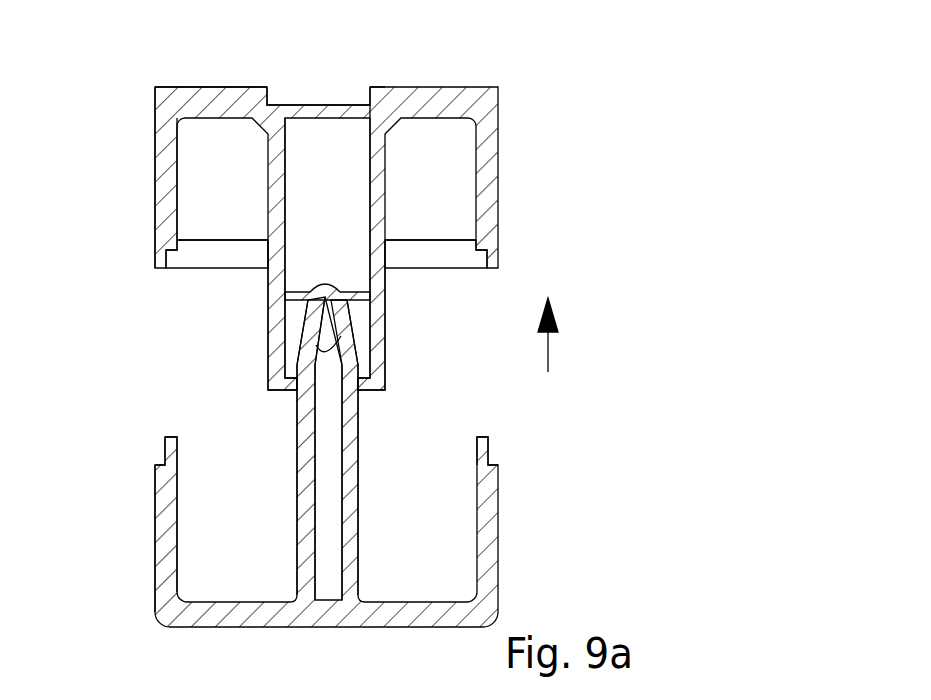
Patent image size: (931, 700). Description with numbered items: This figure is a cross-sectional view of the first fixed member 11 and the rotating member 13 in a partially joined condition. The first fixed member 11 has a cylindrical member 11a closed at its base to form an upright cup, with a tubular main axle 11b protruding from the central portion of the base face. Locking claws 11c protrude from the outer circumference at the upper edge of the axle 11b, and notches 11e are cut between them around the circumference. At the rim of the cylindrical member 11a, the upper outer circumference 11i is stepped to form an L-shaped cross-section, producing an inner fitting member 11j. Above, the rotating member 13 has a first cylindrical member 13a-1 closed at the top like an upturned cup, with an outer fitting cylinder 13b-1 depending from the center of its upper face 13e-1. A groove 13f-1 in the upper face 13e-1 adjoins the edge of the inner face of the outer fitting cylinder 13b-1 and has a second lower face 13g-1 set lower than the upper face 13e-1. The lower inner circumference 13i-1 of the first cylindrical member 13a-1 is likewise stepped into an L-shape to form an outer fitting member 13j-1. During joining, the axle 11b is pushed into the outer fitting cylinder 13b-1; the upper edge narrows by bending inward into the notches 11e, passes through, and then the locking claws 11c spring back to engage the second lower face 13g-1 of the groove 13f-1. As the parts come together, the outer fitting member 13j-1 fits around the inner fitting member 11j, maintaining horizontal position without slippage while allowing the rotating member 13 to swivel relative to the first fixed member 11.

The first fixed member 11 is at (518, 569).
The cylindrical member 11a is at (157, 535).
The tubular main axle 11b is at (297, 420).
The locking claws 11c is at (366, 292).
The notches 11e is at (328, 342).
The upper outer circumference 11i is at (165, 452).
The inner fitting member 11j is at (489, 446).
The rotating member 13 is at (530, 128).
The first cylindrical member 13a-1 is at (155, 177).
The outer fitting cylinder 13b-1 is at (268, 310).
The upper face 13e-1 is at (202, 87).
The groove 13f-1 is at (376, 92).
The second lower face 13g-1 is at (373, 98).
The lower inner circumference 13i-1 is at (157, 252).
The outer fitting member 13j-1 is at (493, 253).